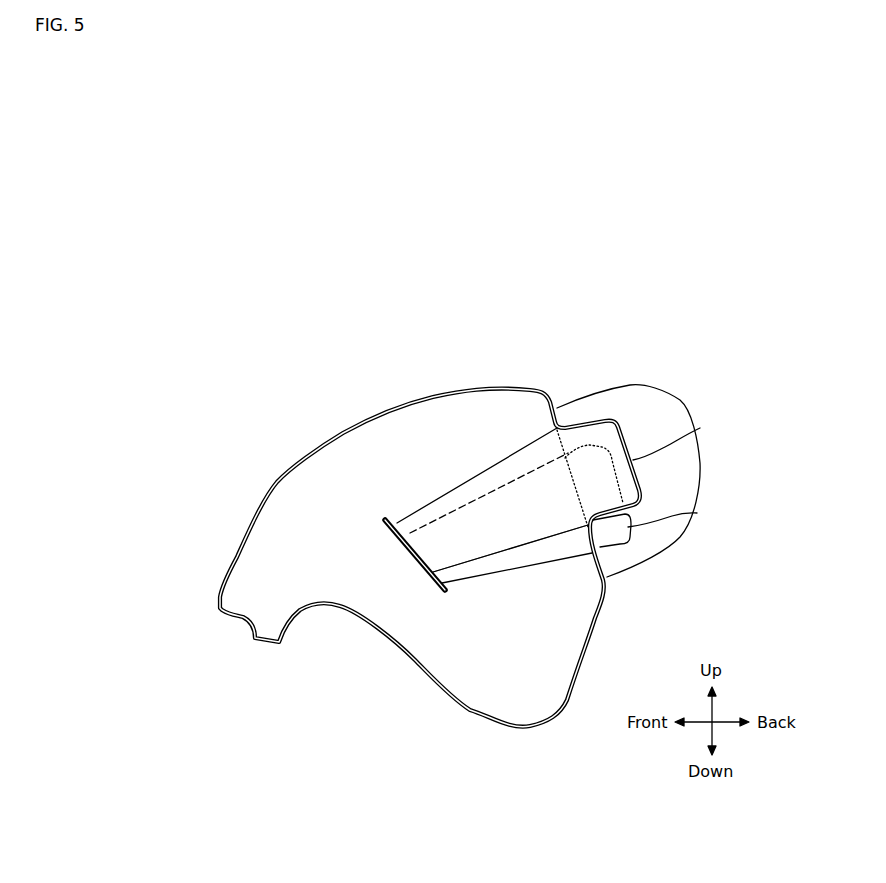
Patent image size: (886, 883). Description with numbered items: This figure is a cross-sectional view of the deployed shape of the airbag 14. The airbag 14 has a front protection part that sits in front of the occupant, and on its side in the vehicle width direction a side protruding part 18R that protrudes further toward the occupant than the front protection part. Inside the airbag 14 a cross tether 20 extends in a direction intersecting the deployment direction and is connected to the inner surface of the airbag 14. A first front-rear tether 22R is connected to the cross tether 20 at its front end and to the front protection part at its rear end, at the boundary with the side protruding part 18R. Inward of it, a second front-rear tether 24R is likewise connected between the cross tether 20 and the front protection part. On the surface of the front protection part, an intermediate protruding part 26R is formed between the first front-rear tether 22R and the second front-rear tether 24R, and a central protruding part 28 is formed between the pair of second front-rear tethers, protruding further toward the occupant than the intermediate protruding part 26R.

The airbag 14 is at (345, 434).
The side protruding part 18R is at (655, 397).
The cross tether 20 is at (423, 567).
The first front-rear tether 22R is at (532, 565).
The second front-rear tether 24R is at (482, 468).
The intermediate protruding part 26R is at (697, 513).
The central protruding part 28 is at (700, 428).